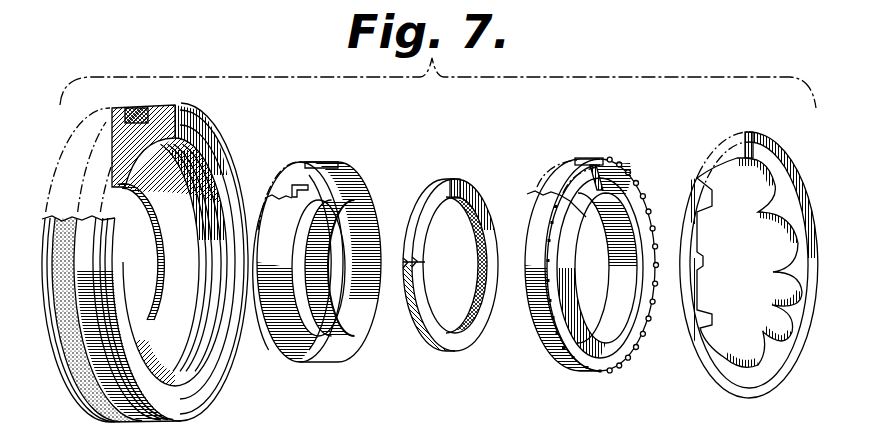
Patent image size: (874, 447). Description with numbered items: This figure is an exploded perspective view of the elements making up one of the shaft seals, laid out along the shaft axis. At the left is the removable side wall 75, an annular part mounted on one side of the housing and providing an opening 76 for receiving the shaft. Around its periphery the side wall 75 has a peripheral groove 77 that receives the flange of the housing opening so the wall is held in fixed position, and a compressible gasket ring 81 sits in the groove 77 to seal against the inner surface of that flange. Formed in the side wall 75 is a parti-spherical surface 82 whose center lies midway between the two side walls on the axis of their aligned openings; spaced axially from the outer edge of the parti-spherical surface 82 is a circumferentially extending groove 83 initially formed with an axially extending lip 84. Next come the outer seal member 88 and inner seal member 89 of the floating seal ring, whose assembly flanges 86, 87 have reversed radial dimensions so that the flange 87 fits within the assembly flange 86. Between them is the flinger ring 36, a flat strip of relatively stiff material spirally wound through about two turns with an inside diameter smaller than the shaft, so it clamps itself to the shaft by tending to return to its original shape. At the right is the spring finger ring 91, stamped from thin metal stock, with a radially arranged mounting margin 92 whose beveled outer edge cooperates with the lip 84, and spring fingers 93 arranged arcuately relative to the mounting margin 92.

The removable side wall 75 is at (207, 117).
The opening 76 is at (152, 217).
The peripheral groove 77 is at (165, 112).
The compressible gasket ring 81 is at (136, 108).
The parti-spherical surface 82 is at (180, 340).
The circumferentially extending groove 83 is at (208, 177).
The axially extending lip 84 is at (206, 158).
The assembly flange 86 is at (326, 163).
The outer seal member 88 is at (362, 177).
The flinger ring 36 is at (476, 190).
The assembly flange 87 is at (586, 157).
The inner seal member 89 is at (641, 186).
The spring finger ring 91 is at (793, 152).
The mounting margin 92 is at (788, 172).
The spring fingers 93 is at (746, 262).